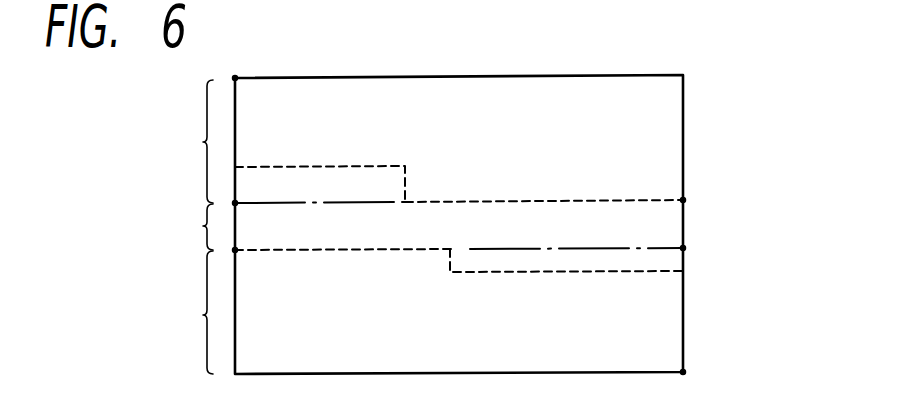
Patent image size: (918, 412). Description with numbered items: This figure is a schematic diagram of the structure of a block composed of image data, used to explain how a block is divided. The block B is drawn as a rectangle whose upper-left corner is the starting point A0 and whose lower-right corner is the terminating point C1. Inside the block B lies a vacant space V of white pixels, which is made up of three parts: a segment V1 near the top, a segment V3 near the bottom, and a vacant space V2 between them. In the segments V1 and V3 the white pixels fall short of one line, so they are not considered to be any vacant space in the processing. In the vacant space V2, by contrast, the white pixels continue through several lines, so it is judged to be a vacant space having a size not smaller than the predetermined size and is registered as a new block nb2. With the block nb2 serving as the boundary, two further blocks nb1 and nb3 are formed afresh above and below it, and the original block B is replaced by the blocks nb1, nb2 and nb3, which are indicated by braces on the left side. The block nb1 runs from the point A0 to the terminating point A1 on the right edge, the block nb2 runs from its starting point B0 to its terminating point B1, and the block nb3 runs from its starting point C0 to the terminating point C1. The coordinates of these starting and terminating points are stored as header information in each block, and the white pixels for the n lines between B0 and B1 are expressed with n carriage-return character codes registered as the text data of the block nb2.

The block B is at (700, 151).
The starting point of block nb1 A0 is at (235, 78).
The starting point of block nb2 B0 is at (235, 203).
The starting point of block nb3 C0 is at (235, 250).
The terminating point of block nb1 A1 is at (683, 200).
The terminating point of block nb2 B1 is at (683, 248).
The terminating point of block nb3 C1 is at (683, 372).
The new block nb1 is at (184, 141).
The new block nb2 is at (184, 227).
The new block nb3 is at (184, 312).
The vacant space segment V1 is at (344, 176).
The vacant space V2 is at (450, 233).
The vacant space segment V3 is at (643, 263).
The vacant space V is at (653, 229).